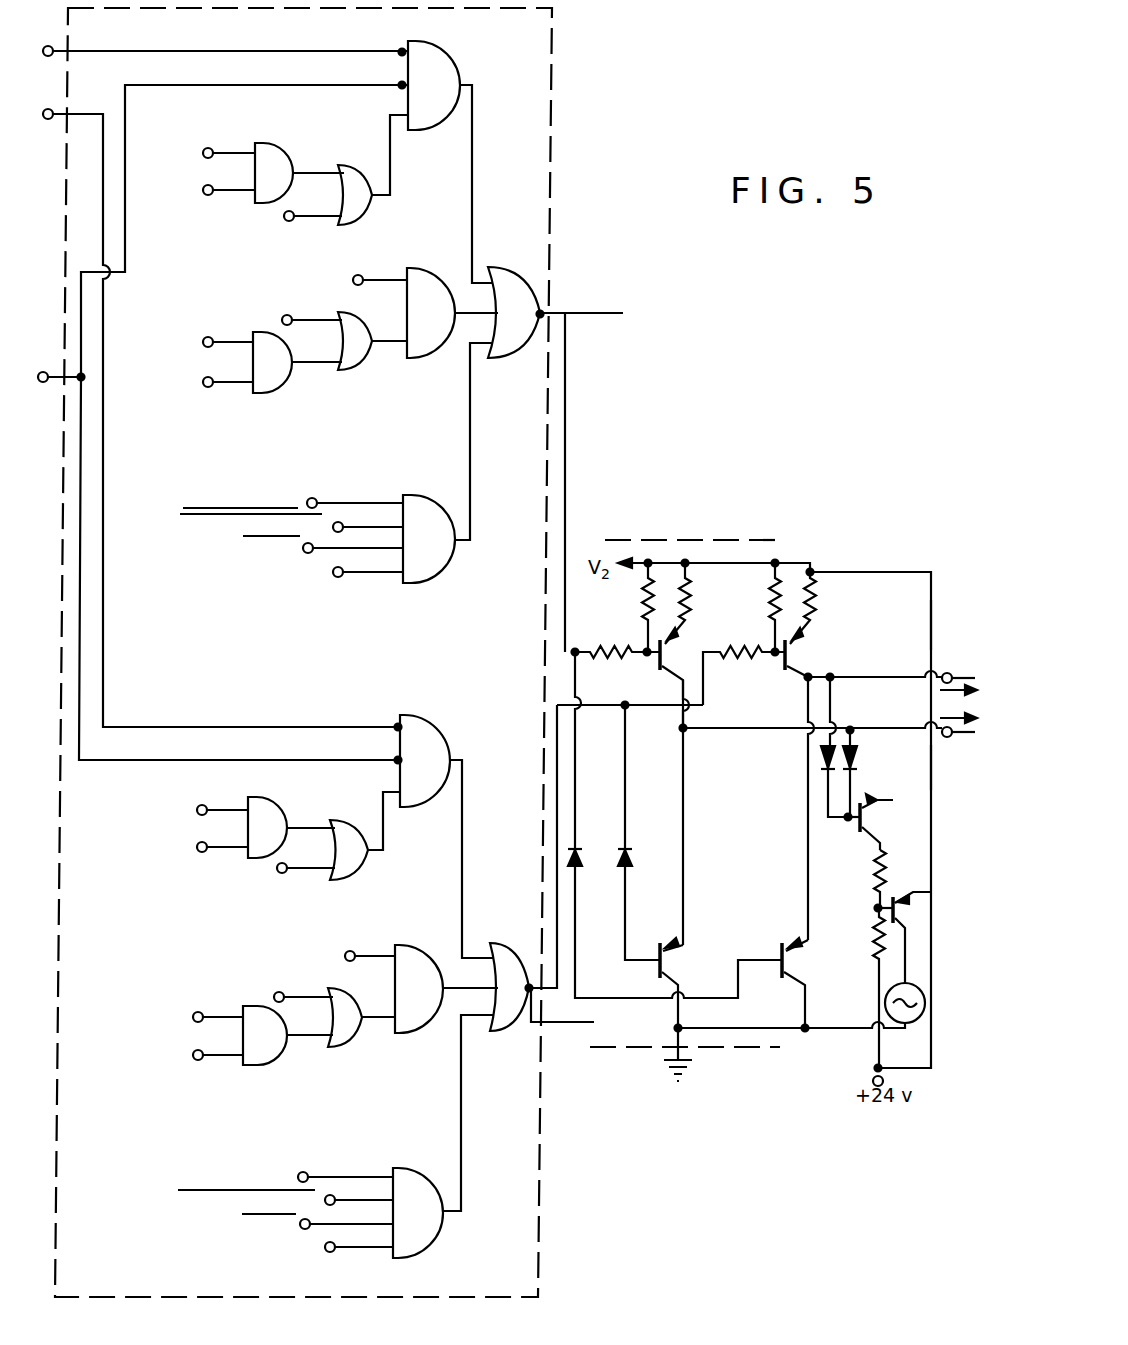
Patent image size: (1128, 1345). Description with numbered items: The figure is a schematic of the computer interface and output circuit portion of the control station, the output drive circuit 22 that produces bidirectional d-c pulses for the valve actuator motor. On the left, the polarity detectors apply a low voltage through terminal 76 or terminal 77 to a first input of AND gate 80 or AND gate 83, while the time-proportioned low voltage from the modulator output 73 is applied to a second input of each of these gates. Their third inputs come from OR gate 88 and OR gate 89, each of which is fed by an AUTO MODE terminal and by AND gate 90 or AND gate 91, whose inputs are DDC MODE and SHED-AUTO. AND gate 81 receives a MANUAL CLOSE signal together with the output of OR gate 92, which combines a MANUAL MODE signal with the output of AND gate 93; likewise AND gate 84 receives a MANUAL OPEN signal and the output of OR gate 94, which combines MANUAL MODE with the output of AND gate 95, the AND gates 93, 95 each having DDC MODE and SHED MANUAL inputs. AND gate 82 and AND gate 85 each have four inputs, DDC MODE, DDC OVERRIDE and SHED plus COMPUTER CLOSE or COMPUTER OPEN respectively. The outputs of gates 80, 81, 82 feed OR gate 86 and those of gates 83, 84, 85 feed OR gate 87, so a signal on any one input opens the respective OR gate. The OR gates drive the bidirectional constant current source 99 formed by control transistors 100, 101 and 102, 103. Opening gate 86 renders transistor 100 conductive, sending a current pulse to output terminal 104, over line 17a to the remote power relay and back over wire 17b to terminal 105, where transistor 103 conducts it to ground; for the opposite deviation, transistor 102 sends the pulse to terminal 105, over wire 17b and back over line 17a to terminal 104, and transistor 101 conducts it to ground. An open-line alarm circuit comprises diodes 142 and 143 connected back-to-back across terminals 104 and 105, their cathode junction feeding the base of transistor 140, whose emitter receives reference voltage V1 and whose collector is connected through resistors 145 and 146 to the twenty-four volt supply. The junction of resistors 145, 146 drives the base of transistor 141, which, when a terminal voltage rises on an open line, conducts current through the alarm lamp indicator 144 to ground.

The output drive circuit 22 is at (575, 138).
The output of the modulator 73 is at (221, 423).
The terminal 76 is at (223, 32).
The terminal 77 is at (220, 402).
The AND gate 80 is at (458, 66).
The AND gate 81 is at (404, 270).
The AND gate 82 is at (420, 500).
The AND gate 83 is at (430, 724).
The AND gate 84 is at (406, 946).
The AND gate 85 is at (420, 1255).
The OR gate 86 is at (507, 274).
The OR gate 87 is at (497, 953).
The OR gate 88 is at (358, 168).
The OR gate 89 is at (352, 874).
The AND gate 90 is at (288, 146).
The AND gate 91 is at (279, 814).
The OR gate 92 is at (360, 367).
The AND gate 93 is at (278, 392).
The OR gate 94 is at (350, 1042).
The AND gate 95 is at (262, 1068).
The bi-directional constant current source 99 is at (766, 532).
The transistor 100 is at (656, 664).
The transistor 101 is at (664, 964).
The transistor 102 is at (786, 653).
The transistor 103 is at (786, 964).
The output terminal 104 is at (945, 770).
The terminal 105 is at (938, 665).
The line 17a is at (960, 742).
The wire 17b is at (963, 676).
The transistor 140 is at (866, 826).
The transistor 141 is at (900, 899).
The diode 142 is at (830, 772).
The diode 143 is at (858, 766).
The alarm lamp indicator 144 is at (910, 1022).
The resistor 145 is at (868, 872).
The resistor 146 is at (872, 920).